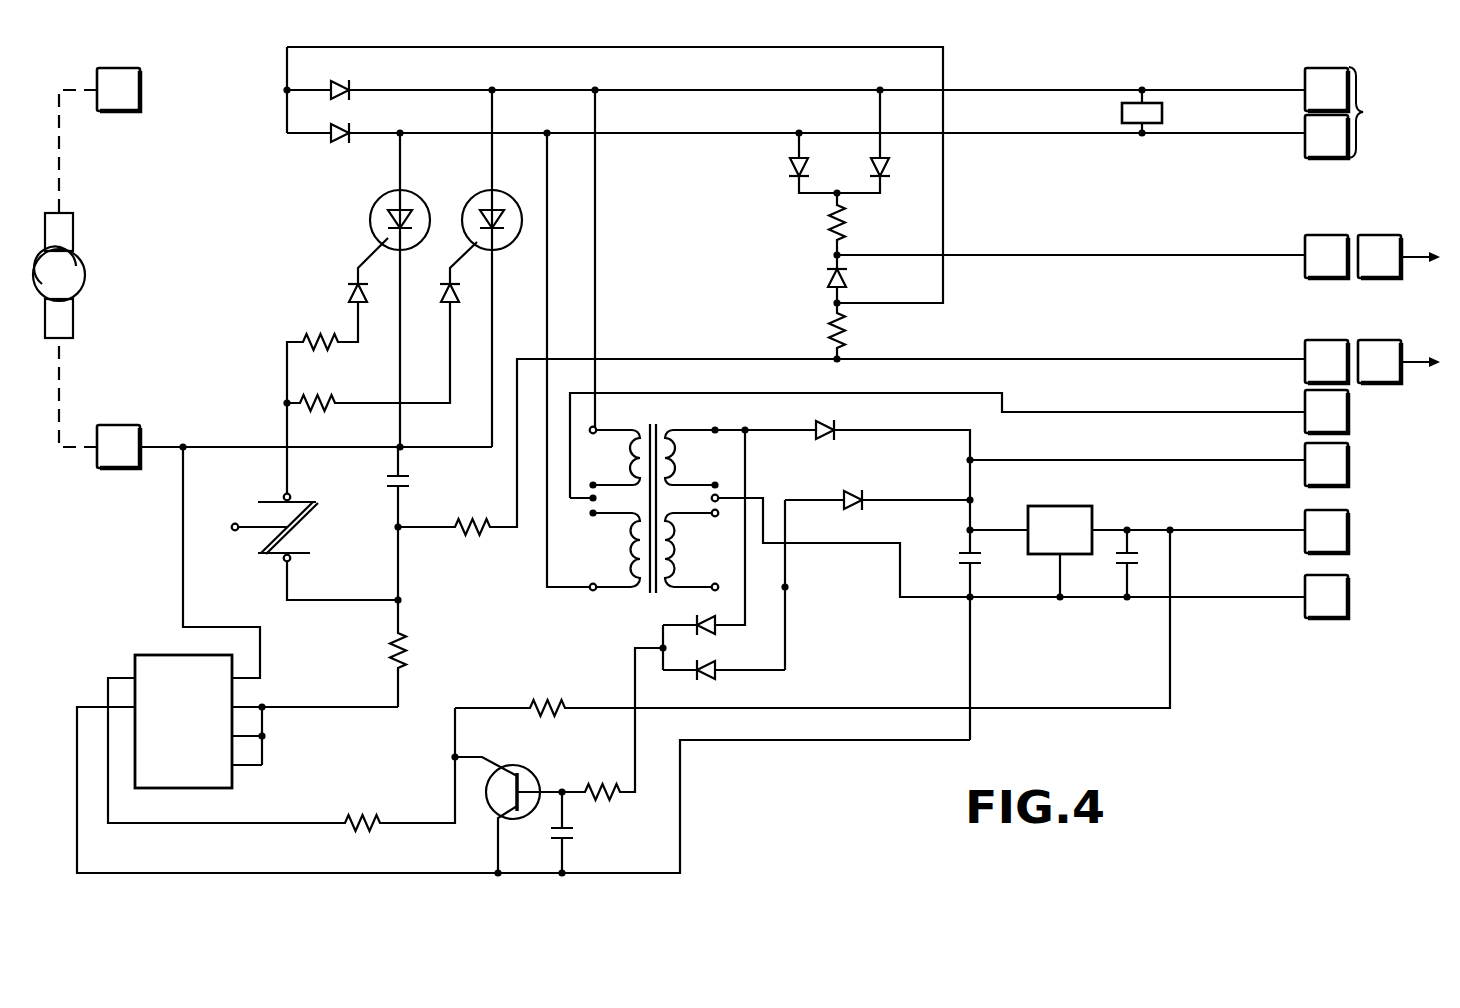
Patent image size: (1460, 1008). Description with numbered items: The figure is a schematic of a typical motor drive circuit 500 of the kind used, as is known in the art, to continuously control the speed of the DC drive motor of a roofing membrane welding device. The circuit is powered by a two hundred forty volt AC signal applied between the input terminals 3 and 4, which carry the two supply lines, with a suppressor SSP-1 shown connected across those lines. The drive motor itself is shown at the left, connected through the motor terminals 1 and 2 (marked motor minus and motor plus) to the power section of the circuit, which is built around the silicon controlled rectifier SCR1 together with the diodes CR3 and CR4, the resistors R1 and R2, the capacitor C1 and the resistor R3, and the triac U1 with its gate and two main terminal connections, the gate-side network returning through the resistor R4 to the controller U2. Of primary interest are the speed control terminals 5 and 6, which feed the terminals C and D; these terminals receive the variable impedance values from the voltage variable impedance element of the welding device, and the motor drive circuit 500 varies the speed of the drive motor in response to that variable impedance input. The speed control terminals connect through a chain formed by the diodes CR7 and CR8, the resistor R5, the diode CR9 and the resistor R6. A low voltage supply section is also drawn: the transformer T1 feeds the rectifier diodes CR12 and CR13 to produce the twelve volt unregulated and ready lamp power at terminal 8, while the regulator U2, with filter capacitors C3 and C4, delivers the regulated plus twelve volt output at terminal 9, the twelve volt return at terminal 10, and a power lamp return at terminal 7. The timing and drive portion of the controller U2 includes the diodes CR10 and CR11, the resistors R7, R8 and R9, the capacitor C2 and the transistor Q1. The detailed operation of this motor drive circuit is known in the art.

The motor drive circuit 500 is at (383, 881).
The motor (-) terminal 1 is at (118, 89).
The motor (+) terminal 2 is at (118, 446).
The input terminal 3 is at (1326, 89).
The input terminal 4 is at (1326, 136).
The speed control-1 terminal 5 is at (1326, 256).
The speed control-2 terminal 6 is at (1326, 361).
The power lamp return terminal 7 is at (1326, 411).
The 12VDC unregulated and ready lamp power terminal 8 is at (1326, 464).
The +12VDC terminal 9 is at (1326, 531).
The 12V return terminal 10 is at (1326, 596).
The surge suppressor SSP-1 is at (1122, 122).
The silicon controlled rectifier SCR1 is at (468, 196).
The diode CR3 is at (347, 289).
The diode CR4 is at (440, 289).
The diode CR7 is at (790, 176).
The diode CR8 is at (887, 173).
The diode CR9 is at (825, 279).
The diode CR10 is at (696, 618).
The diode CR11 is at (714, 678).
The diode CR12 is at (861, 422).
The diode CR13 is at (888, 491).
The resistor R1 is at (330, 353).
The resistor R2 is at (328, 413).
The resistor R3 is at (467, 538).
The resistor R4 is at (414, 650).
The resistor R5 is at (829, 223).
The resistor R6 is at (823, 331).
The resistor R7 is at (362, 813).
The resistor R8 is at (547, 693).
The resistor R9 is at (602, 778).
The capacitor C1 is at (410, 481).
The capacitor C2 is at (575, 835).
The capacitor C3 is at (961, 572).
The capacitor C4 is at (1122, 572).
The triac U1 is at (302, 530).
The integrated circuit / voltage regulator U2 is at (621, 647).
The transistor Q1 is at (532, 776).
The transformer T1 is at (653, 496).